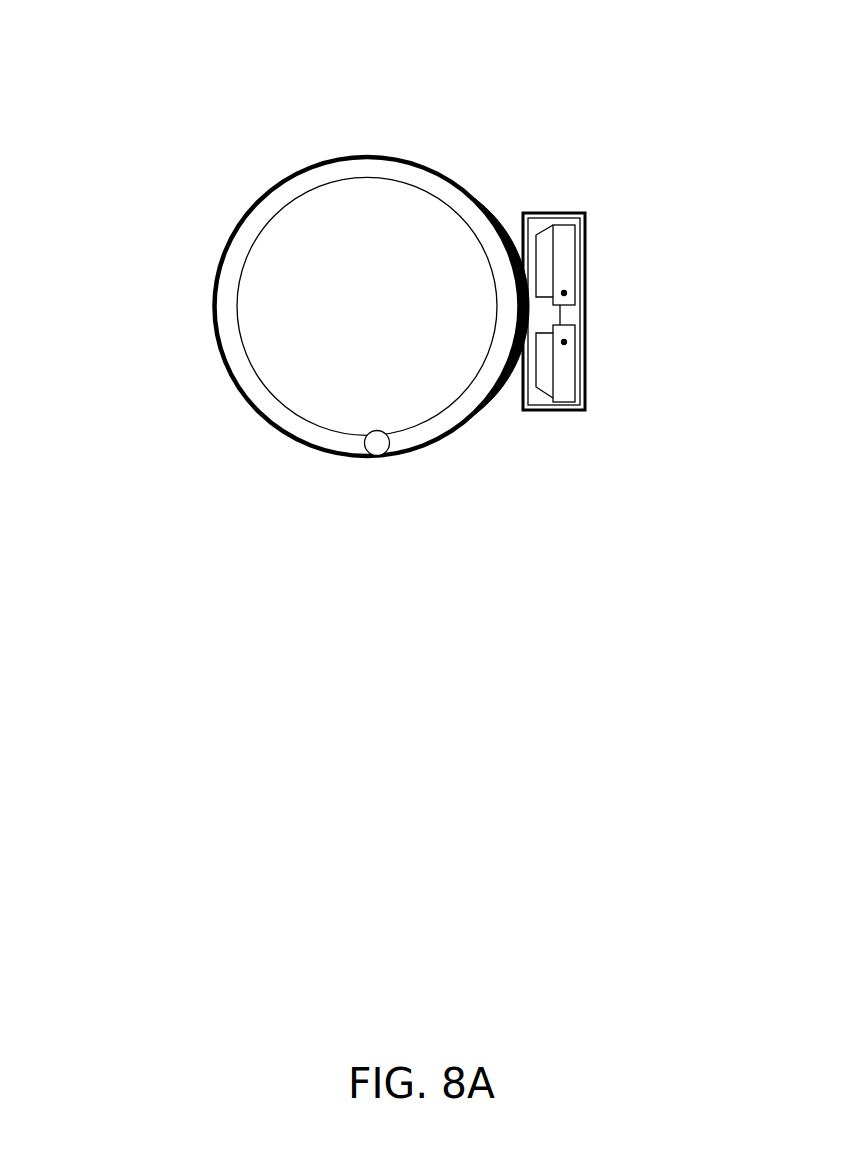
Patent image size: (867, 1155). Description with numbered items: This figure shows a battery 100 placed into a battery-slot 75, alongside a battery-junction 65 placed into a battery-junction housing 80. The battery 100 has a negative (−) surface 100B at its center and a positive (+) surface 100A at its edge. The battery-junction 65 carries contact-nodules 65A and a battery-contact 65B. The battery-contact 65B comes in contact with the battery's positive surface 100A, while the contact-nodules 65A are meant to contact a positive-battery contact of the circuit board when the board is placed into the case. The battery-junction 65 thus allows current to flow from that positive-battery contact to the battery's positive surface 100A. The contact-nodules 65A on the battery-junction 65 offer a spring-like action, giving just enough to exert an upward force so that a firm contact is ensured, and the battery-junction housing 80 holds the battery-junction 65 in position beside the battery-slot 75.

The battery-slot 75 is at (282, 182).
The battery 100 is at (395, 170).
The battery's positive (+) surface 100A is at (364, 447).
The battery's negative (−) surface 100B is at (287, 278).
The battery-junction 65 is at (563, 233).
The contact-nodules 65A is at (564, 293).
The battery-contact 65B is at (498, 403).
The battery-junction housing 80 is at (585, 262).